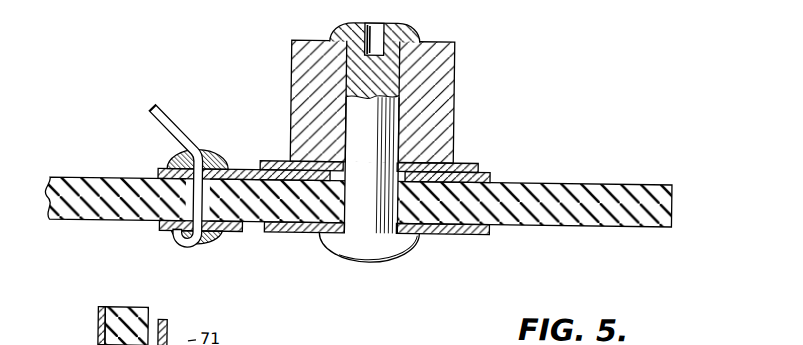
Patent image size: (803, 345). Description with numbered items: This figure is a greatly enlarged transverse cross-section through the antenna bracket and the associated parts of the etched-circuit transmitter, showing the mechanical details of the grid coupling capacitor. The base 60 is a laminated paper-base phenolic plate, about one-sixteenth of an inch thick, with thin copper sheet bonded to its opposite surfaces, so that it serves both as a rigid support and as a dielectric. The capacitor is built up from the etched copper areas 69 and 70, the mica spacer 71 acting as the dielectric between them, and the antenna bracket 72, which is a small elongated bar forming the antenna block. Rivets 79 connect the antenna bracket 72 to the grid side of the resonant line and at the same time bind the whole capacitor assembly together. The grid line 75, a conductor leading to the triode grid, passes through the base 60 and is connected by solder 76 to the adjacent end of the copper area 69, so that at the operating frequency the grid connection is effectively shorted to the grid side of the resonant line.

The base 60 is at (673, 198).
The copper area 70 is at (247, 171).
The mica spacer 71 is at (448, 162).
The antenna bracket 72 is at (447, 95).
The rivets 79 is at (410, 23).
The grid line 75 is at (148, 124).
The solder 76 is at (212, 150).
The copper area 69 is at (158, 226).